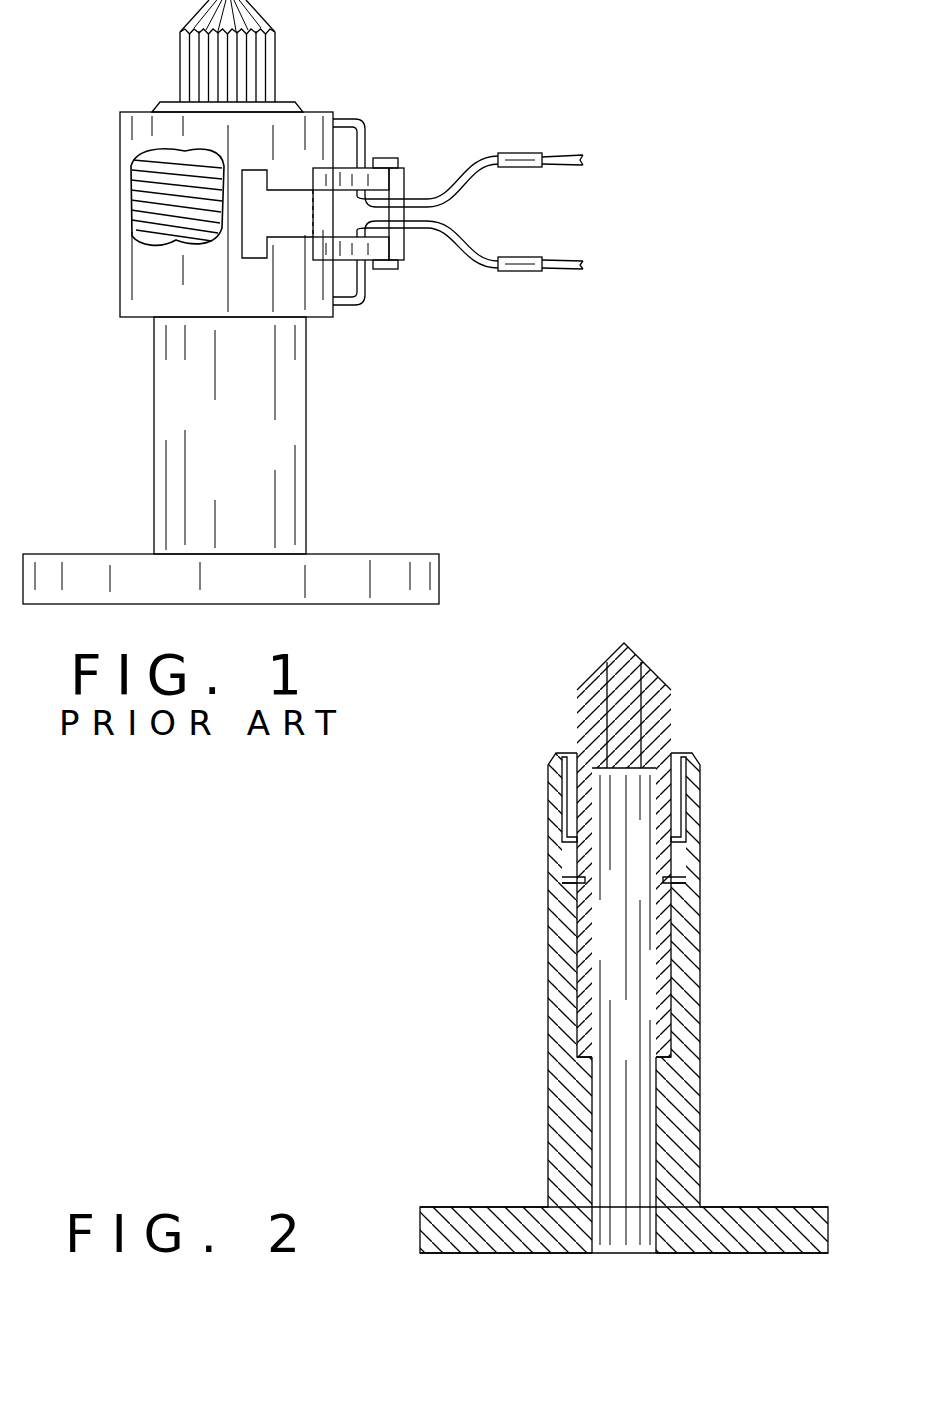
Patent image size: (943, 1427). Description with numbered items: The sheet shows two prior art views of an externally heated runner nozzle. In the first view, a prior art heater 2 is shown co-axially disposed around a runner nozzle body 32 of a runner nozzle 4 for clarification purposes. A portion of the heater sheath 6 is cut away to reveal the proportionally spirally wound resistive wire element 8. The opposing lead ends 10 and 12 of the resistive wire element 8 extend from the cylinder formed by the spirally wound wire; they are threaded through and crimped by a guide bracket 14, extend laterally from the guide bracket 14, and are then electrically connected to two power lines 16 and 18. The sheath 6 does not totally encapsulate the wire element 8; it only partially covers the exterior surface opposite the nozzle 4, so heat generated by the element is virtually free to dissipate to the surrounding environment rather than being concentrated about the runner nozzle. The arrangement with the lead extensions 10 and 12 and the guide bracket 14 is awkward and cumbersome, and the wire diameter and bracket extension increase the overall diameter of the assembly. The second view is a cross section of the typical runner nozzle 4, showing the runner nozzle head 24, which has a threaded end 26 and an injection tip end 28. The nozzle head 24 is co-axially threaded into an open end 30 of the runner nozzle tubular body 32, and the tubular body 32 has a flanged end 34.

In FIG. 1, the prior art heater 2 is at (120, 267).
In FIG. 1, the runner nozzle 4 is at (114, 407).
In FIG. 2, the runner nozzle 4 is at (516, 1093).
In FIG. 1, the heater sheath 6 is at (140, 130).
In FIG. 1, the resistive wire element 8 is at (132, 173).
In FIG. 1, the lead end 10 is at (353, 125).
In FIG. 1, the lead end 12 is at (363, 300).
In FIG. 1, the guide bracket 14 is at (374, 176).
In FIG. 1, the power line 16 is at (571, 152).
In FIG. 1, the power line 18 is at (563, 276).
In FIG. 2, the runner nozzle head 24 is at (580, 812).
In FIG. 2, the threaded end 26 is at (580, 968).
In FIG. 2, the injection tip end 28 is at (627, 658).
In FIG. 2, the open end 30 is at (666, 786).
In FIG. 1, the runner nozzle tubular body 32 is at (154, 509).
In FIG. 2, the runner nozzle tubular body 32 is at (690, 1060).
In FIG. 2, the flanged end 34 is at (838, 1220).